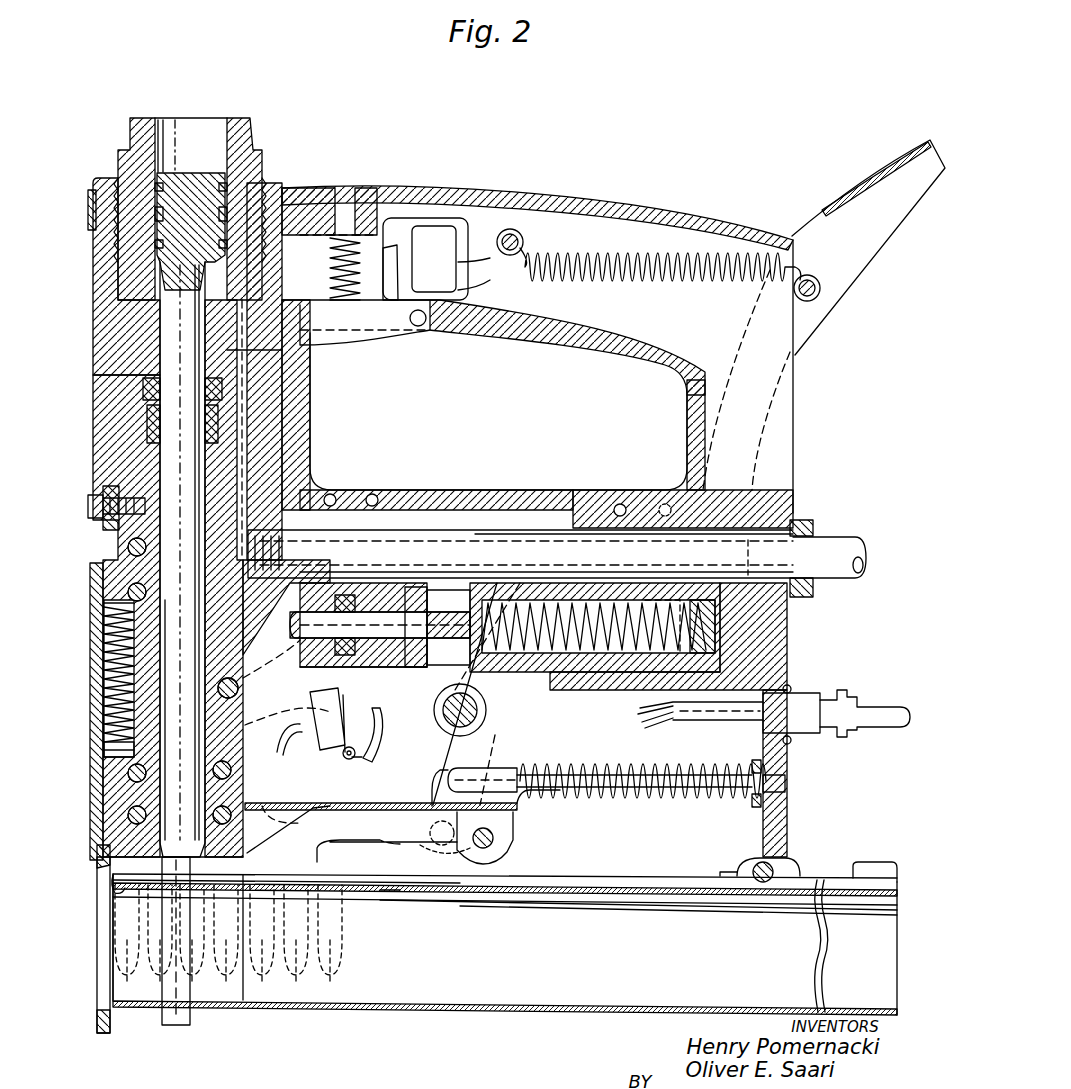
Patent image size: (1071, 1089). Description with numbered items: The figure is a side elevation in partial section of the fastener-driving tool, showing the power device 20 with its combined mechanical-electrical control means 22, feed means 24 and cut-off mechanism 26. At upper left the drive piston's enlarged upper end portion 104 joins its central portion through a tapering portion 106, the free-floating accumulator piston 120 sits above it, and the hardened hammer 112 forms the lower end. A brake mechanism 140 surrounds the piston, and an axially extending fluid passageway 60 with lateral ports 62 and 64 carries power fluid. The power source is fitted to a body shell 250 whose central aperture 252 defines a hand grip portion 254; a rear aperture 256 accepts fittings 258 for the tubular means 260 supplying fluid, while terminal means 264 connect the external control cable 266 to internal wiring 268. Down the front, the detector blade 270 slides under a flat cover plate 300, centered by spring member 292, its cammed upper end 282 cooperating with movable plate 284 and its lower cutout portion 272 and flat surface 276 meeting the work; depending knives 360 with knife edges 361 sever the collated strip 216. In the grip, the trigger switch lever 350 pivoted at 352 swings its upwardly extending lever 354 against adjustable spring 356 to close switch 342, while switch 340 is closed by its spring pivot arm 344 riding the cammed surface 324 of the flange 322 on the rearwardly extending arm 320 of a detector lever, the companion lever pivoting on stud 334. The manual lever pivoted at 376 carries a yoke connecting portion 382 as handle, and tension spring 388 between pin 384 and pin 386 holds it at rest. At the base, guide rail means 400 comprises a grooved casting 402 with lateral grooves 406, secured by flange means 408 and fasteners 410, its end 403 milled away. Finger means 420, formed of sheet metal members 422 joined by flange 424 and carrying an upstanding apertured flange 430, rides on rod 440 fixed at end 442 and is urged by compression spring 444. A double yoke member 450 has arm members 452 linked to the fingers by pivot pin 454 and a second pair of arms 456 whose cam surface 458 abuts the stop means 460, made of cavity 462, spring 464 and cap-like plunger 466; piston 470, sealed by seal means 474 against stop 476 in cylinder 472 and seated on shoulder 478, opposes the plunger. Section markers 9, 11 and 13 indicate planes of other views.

The power device 20 is at (130, 112).
The accumulator piston 120 is at (208, 178).
The enlarged upper end portion 104 is at (165, 303).
The tapering portion 106 is at (143, 380).
The brake mechanism 140 is at (232, 358).
The fluid passageway 60 is at (243, 418).
The lateral port 62 is at (250, 528).
The lateral port 64 is at (208, 592).
The movable plate 284 is at (104, 514).
The upper end 282 is at (116, 550).
The detector blade 270 is at (96, 578).
The cover plate 300 is at (108, 640).
The spring member 292 is at (108, 728).
The depending knives 360 is at (97, 872).
The cut-off mechanism 26 is at (97, 900).
The knife edges 361 is at (128, 899).
The lower cutout portion 272 is at (103, 955).
The flat surface 276 is at (97, 1028).
The combined mechanical-electrical control means 22 is at (113, 1030).
The hammer 112 is at (180, 1005).
The collated strip 216 is at (348, 968).
The upwardly extending lever 354 is at (392, 244).
The switch 342 is at (433, 235).
The pin 384 is at (509, 229).
The hand grip portion 254 is at (596, 200).
The yoke connecting portion 382 is at (860, 172).
The pin 386 is at (808, 277).
The tension spring 388 is at (614, 278).
The adjustable spring 356 is at (327, 272).
The pivot 352 is at (420, 327).
The trigger switch lever 350 is at (355, 345).
The central aperture 252 is at (311, 425).
The fittings 258 is at (815, 522).
The tubular means 260 is at (852, 548).
The rear aperture 256 is at (772, 557).
The body shell 250 is at (790, 622).
The terminal means 264 is at (786, 694).
The control cable 266 is at (880, 706).
The internal wiring 268 is at (715, 710).
The shoulder 478 is at (297, 582).
The seal means 474 is at (334, 592).
The cylinder 472 is at (358, 594).
The stop 476 is at (405, 590).
The second pair of arms 456 is at (444, 580).
The cam surface 458 is at (457, 600).
The stop means 460 is at (570, 576).
The spring 464 is at (588, 605).
The cap-like plunger 466 is at (644, 604).
The cavity 462 is at (703, 598).
The piston 470 is at (380, 625).
The spring pivot arm 344 is at (344, 672).
The double yoke member 450 is at (436, 708).
The pivot pin 376 is at (530, 708).
The upstanding apertured flange 430 is at (525, 767).
The stud 334 is at (248, 688).
The rearwardly extending arm 320 is at (273, 750).
The switch 340 is at (324, 726).
The laterally extending flange 322 is at (380, 728).
The cammed surface 324 is at (355, 762).
The arm members 452 is at (442, 772).
The sheet metal members 422 is at (402, 802).
The flange 424 is at (387, 840).
The end 403 is at (294, 876).
The pivot pin 454 is at (498, 850).
The feed means 24 is at (532, 820).
The compression spring 444 is at (578, 798).
The rod 440 is at (646, 800).
The end 442 is at (786, 783).
The fasteners 410 is at (745, 868).
The flange means 408 is at (788, 866).
The finger means 420 is at (403, 832).
The lateral grooves 406 is at (460, 886).
The guide rail means 400 is at (552, 914).
The grooved casting 402 is at (648, 890).
The section line 9 is at (212, 97).
The section line 11 is at (383, 750).
The section line 13 is at (520, 146).